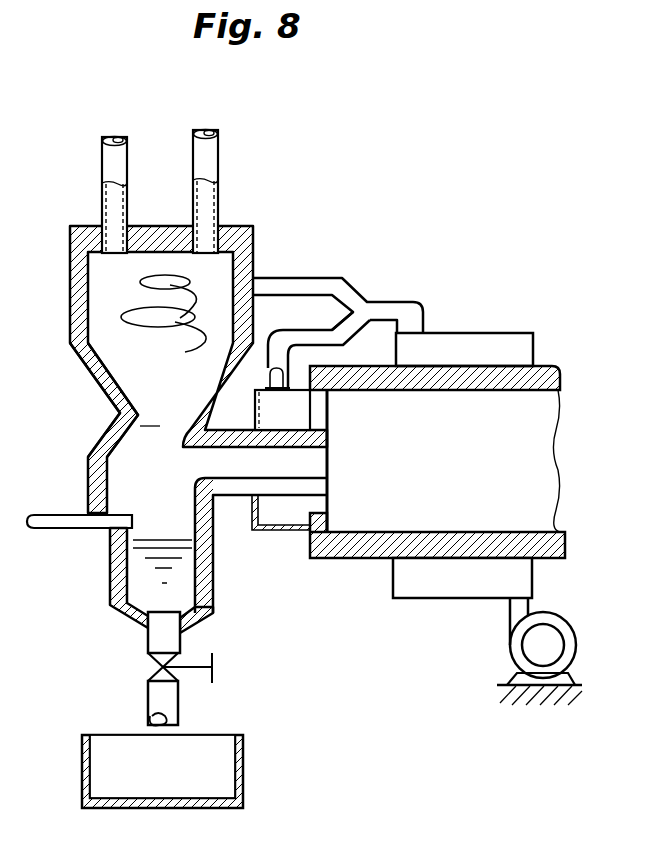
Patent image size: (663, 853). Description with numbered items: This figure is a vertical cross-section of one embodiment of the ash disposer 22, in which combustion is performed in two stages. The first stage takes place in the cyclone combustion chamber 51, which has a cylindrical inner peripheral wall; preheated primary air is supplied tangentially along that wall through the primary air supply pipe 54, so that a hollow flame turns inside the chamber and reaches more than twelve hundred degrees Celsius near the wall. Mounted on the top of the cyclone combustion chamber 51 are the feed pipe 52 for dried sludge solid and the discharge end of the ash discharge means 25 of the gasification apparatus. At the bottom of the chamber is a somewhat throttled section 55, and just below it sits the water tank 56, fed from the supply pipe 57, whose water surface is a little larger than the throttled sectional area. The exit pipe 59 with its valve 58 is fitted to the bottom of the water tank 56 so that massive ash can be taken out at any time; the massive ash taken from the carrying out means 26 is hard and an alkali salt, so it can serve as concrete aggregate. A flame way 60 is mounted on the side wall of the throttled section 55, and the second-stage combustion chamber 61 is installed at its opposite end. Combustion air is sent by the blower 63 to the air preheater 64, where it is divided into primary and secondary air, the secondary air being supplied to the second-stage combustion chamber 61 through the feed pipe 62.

The ash disposer 22 is at (358, 147).
The ash discharge means 25 is at (218, 156).
The carrying out means 26 is at (245, 770).
The cyclone combustion chamber 51 is at (100, 298).
The feed pipe 52 is at (102, 165).
The primary air supply pipe 54 is at (322, 283).
The throttled section 55 is at (115, 410).
The water tank 56 is at (135, 588).
The supply pipe 57 is at (45, 530).
The valve 58 is at (212, 662).
The exit pipe 59 is at (178, 705).
The flame way 60 is at (233, 470).
The second-stage combustion chamber 61 is at (494, 408).
The feed pipe 62 is at (320, 338).
The blower 63 is at (570, 640).
The air preheater 64 is at (445, 598).